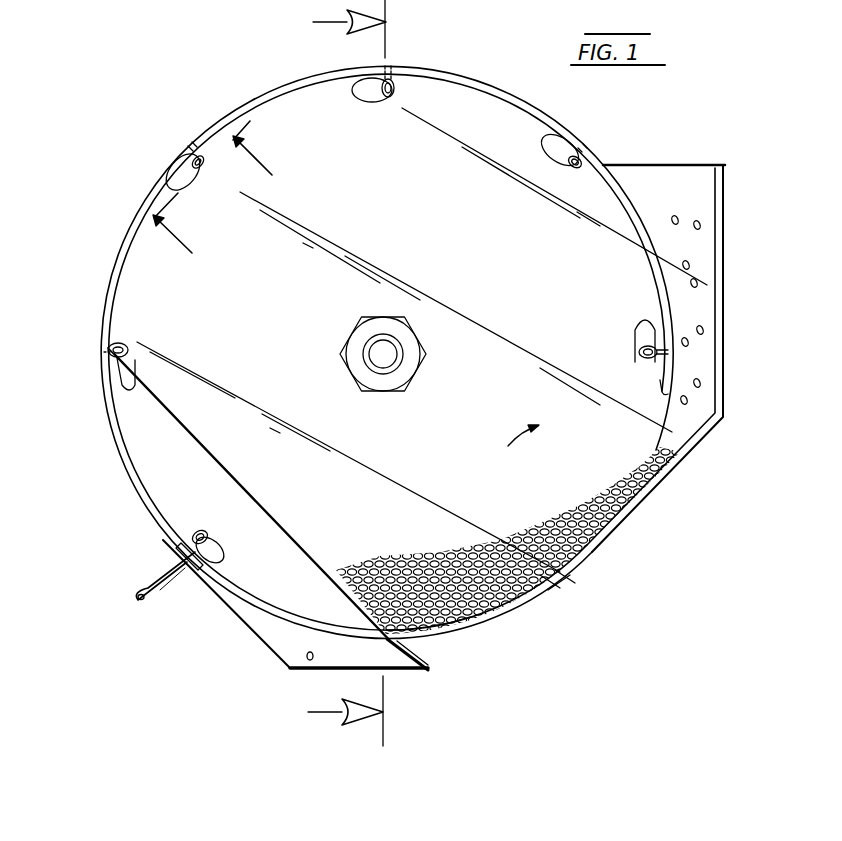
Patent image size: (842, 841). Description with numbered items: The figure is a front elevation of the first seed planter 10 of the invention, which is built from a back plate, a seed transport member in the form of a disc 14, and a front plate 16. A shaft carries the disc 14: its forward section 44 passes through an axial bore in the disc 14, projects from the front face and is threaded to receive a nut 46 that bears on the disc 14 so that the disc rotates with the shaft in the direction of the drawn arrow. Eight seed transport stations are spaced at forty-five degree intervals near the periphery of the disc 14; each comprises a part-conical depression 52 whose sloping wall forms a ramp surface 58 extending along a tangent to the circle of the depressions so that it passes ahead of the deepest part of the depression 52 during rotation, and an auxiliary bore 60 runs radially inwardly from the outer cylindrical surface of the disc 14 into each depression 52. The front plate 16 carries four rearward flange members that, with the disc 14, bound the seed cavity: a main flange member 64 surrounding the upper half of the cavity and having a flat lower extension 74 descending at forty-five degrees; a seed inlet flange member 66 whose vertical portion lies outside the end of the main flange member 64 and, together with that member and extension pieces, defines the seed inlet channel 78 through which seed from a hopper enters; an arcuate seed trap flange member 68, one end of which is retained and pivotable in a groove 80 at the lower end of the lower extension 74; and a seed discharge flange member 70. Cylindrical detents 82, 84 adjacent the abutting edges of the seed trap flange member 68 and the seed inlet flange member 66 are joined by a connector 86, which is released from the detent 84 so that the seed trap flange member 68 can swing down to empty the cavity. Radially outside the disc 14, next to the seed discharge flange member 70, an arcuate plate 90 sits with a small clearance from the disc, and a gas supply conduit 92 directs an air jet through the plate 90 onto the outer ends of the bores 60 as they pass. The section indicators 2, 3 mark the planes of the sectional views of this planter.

The seed planter 10 is at (192, 111).
The disc 14 is at (478, 115).
The front plate 16 is at (172, 295).
The forward section 44 is at (393, 355).
The nut 46 is at (358, 365).
The depression 52 is at (398, 88).
The ramp surface 58 is at (375, 98).
The bore 60 is at (193, 155).
The main flange member 64 is at (543, 113).
The seed inlet flange member 66 is at (720, 364).
The seed trap flange member 68 is at (447, 635).
The seed discharge flange member 70 is at (263, 632).
The lower extension 74 is at (248, 492).
The seed inlet channel 78 is at (690, 204).
The groove 80 is at (388, 641).
The detent 82 is at (558, 590).
The detent 84 is at (564, 578).
The connector 86 is at (560, 585).
The arcuate plate 90 is at (178, 553).
The gas supply conduit 92 is at (165, 585).
The section line 2 is at (361, 373).
The section line 3 is at (207, 189).